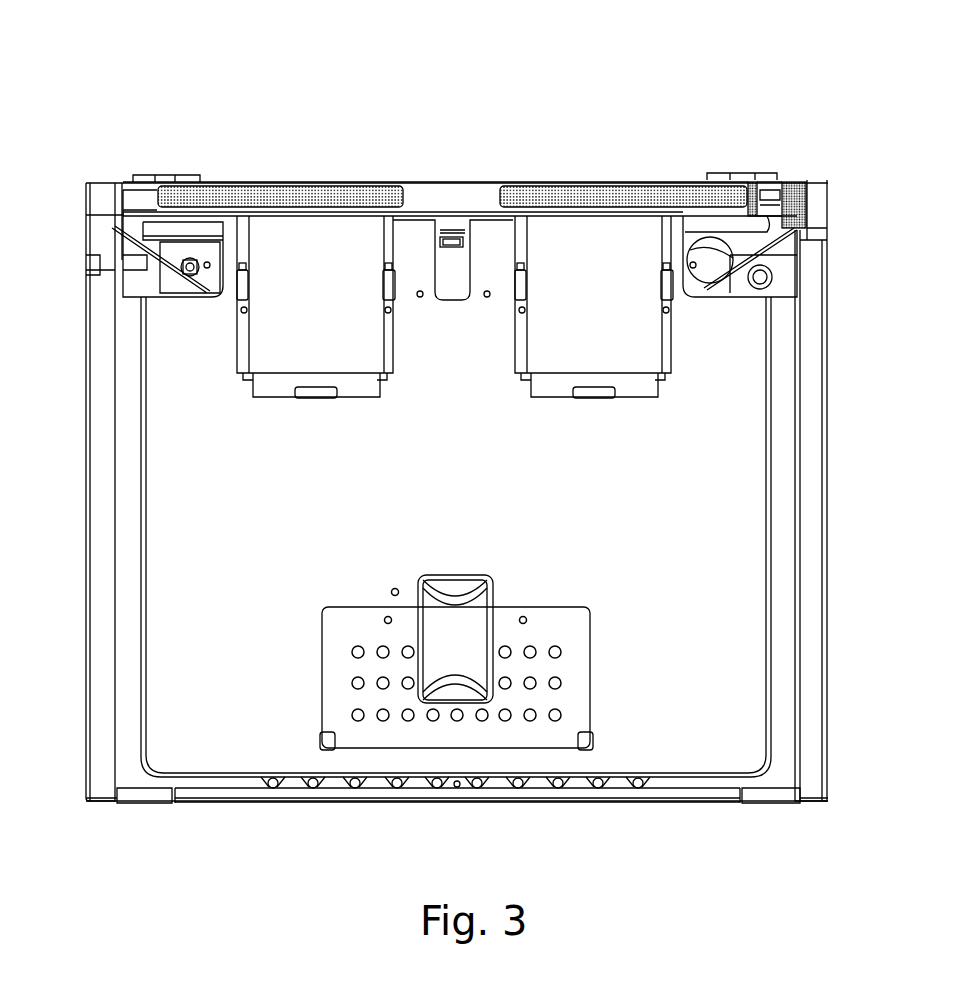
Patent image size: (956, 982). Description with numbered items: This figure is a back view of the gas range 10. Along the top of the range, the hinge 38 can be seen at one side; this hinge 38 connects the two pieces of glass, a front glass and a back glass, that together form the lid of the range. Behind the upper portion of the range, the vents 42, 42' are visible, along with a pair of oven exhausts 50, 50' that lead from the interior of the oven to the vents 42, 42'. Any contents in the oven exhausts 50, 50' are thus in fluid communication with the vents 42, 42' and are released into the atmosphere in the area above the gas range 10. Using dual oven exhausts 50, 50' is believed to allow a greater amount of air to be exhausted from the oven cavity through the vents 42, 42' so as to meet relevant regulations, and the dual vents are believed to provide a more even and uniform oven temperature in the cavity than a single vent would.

The gas range 10 is at (457, 491).
The hinge 38 is at (150, 180).
The vent 42' is at (280, 127).
The vent 42 is at (653, 136).
The oven exhaust 50' is at (387, 231).
The oven exhaust 50 is at (673, 249).